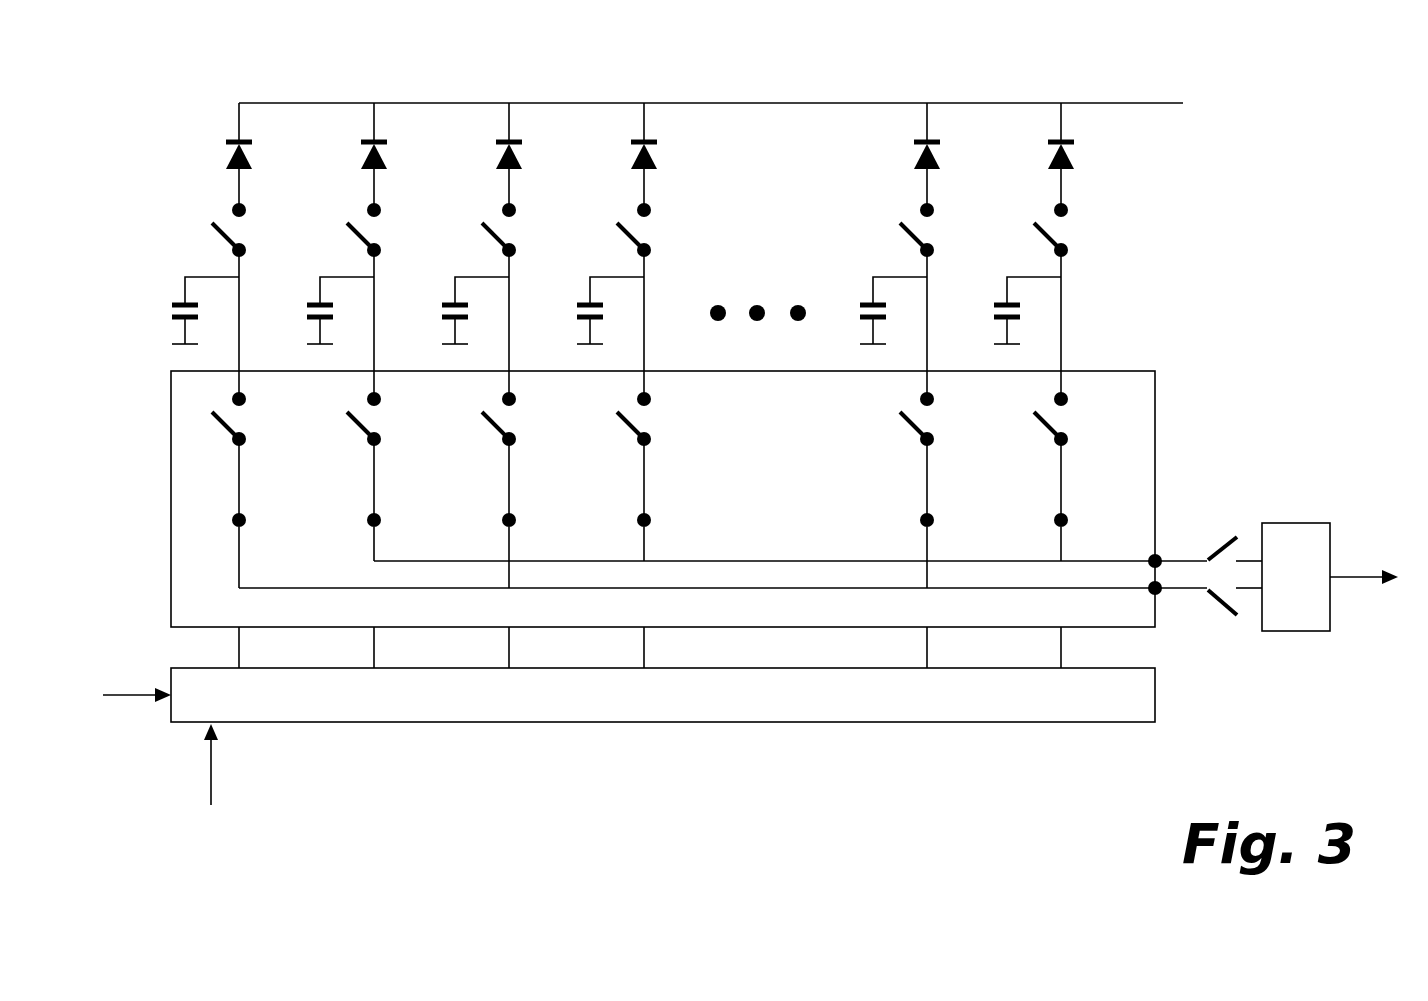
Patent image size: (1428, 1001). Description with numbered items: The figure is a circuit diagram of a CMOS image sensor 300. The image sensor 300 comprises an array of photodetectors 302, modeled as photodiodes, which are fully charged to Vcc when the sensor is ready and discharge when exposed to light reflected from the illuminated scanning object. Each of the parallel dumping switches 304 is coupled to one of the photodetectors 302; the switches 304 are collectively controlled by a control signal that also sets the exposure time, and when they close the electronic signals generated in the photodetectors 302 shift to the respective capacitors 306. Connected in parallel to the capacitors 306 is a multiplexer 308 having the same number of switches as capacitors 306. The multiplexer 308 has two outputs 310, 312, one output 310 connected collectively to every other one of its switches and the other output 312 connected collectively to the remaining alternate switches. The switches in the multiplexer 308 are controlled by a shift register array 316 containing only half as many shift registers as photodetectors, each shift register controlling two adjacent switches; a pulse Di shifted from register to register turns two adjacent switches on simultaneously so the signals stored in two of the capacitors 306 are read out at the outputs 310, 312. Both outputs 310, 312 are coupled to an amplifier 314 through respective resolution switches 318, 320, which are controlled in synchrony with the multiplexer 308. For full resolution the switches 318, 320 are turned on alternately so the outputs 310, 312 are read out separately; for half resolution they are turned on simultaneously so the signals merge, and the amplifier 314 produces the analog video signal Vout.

The CMOS image sensor 300 is at (822, 62).
The photodetectors 302 is at (206, 146).
The parallel dumping switches 304 is at (190, 230).
The capacitors 306 is at (148, 310).
The multiplexer 308 is at (182, 443).
The output 310 is at (1149, 555).
The output 312 is at (1148, 597).
The amplifier 314 is at (1285, 529).
The shift register array 316 is at (667, 755).
The resolution switch 318 is at (1212, 546).
The resolution switch 320 is at (1217, 622).